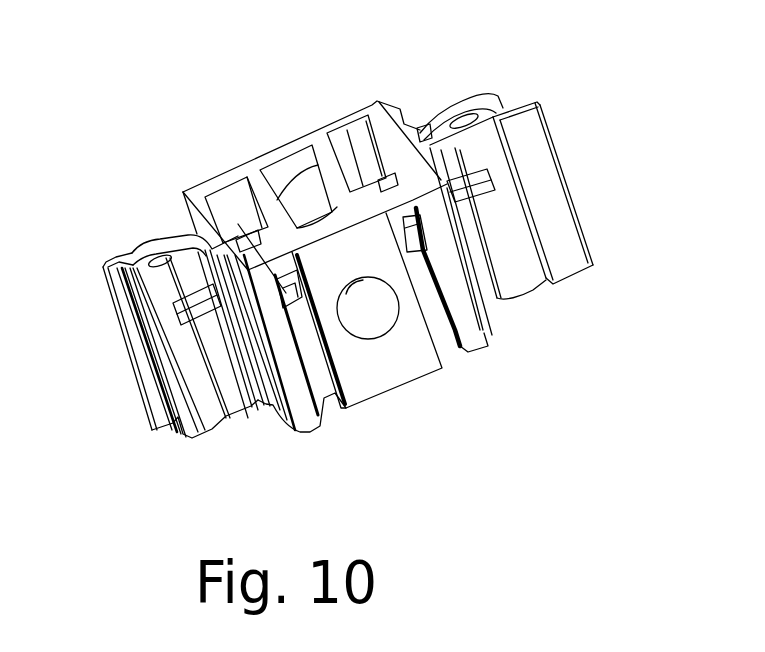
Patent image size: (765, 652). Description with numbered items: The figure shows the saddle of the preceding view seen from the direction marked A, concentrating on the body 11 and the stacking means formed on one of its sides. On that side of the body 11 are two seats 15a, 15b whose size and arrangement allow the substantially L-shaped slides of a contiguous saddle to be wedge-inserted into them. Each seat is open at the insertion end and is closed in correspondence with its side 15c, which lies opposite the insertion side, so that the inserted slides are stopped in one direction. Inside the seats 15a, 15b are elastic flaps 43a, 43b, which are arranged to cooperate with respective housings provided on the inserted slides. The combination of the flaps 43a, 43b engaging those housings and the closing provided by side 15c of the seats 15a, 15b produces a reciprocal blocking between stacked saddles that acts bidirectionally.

The body 11 is at (395, 368).
The seat 15a is at (445, 335).
The seat 15b is at (322, 386).
The closed side of the seats 15c is at (404, 218).
The elastic flap 43a is at (412, 232).
The elastic flap 43b is at (183, 190).